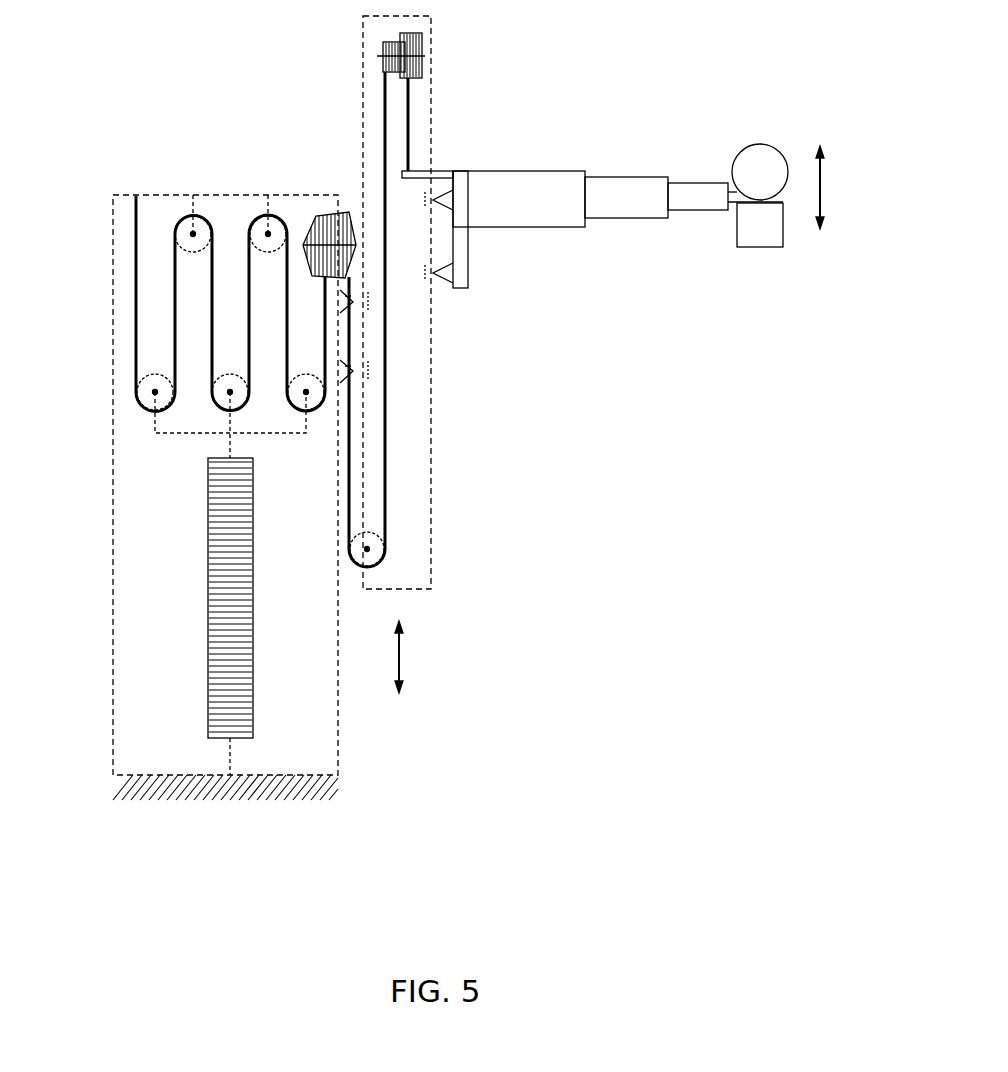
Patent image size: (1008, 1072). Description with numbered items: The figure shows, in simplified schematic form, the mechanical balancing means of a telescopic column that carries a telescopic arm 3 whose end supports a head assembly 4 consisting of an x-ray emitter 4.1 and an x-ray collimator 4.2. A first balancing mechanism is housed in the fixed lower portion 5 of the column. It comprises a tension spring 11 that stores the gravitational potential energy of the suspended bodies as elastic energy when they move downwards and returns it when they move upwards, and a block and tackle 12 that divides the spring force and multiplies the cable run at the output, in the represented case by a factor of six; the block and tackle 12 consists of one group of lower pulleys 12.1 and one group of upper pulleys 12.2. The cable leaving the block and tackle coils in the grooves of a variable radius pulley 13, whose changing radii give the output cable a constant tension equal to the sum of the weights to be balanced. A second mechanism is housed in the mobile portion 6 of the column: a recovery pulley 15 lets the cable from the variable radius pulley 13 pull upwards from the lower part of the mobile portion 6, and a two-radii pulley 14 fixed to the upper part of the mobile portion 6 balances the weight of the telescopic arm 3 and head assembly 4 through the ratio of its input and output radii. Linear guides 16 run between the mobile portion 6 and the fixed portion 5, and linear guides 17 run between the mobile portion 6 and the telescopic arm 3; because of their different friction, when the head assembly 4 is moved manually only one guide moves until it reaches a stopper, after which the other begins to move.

The telescopic arm 3 is at (613, 145).
The head assembly 4 is at (843, 186).
The x-ray emitter 4.1 is at (757, 166).
The x-ray collimator 4.2 is at (762, 228).
The fixed lower portion 5 is at (108, 690).
The mobile portion 6 is at (441, 461).
The tension spring 11 is at (215, 575).
The block and tackle 12 is at (221, 319).
The lower pulleys 12.1 is at (304, 393).
The upper pulleys 12.2 is at (267, 231).
The variable radius pulley 13 is at (320, 212).
The two-radii pulley 14 is at (373, 33).
The recovery pulley 15 is at (369, 550).
The linear guides 16 is at (370, 293).
The linear guides 17 is at (432, 200).